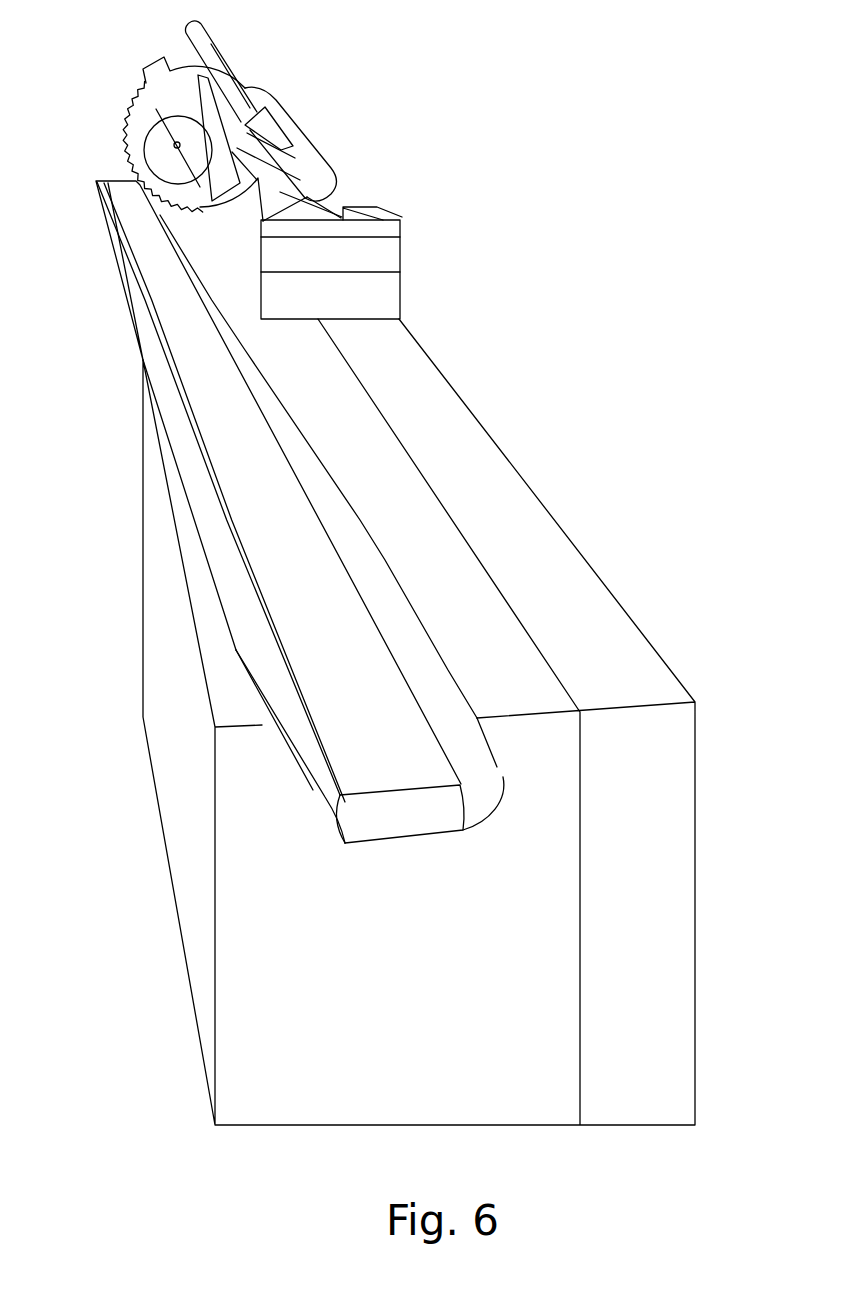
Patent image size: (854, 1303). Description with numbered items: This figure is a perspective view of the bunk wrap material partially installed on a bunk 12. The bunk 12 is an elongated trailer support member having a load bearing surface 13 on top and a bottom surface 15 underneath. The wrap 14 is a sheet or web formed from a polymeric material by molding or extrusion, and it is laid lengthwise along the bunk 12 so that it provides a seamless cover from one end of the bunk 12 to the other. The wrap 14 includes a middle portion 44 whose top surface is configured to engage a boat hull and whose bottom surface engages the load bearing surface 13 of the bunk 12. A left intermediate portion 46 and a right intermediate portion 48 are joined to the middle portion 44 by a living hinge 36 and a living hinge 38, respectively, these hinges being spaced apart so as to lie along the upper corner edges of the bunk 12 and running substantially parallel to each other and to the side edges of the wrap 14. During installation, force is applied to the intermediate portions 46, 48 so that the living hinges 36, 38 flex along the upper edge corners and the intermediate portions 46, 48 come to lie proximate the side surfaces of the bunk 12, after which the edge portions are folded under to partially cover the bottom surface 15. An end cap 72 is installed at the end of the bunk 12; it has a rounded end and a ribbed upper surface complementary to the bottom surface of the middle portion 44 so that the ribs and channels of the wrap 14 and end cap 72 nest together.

The bunk 12 is at (196, 406).
The load bearing surface 13 is at (150, 319).
The wrap 14 is at (200, 487).
The bottom surface 15 is at (260, 495).
The living hinge 36 is at (333, 840).
The living hinge 38 is at (463, 830).
The middle portion 44 is at (320, 822).
The left intermediate portion 46 is at (313, 785).
The right intermediate portion 48 is at (482, 792).
The end cap 72 is at (400, 820).